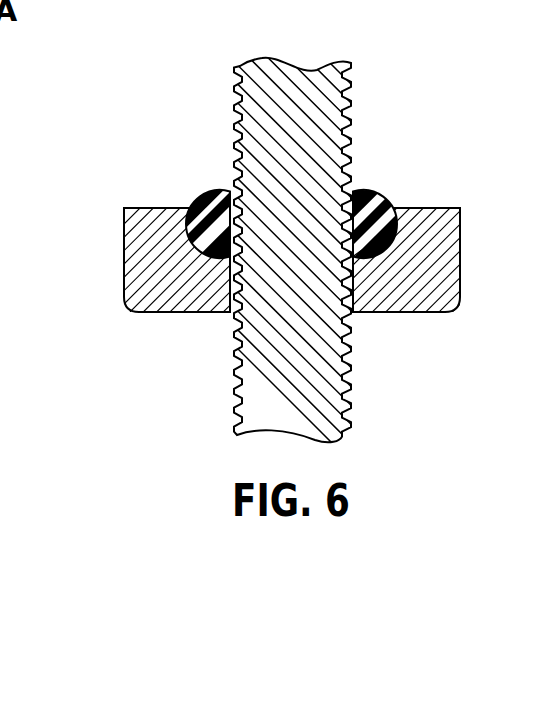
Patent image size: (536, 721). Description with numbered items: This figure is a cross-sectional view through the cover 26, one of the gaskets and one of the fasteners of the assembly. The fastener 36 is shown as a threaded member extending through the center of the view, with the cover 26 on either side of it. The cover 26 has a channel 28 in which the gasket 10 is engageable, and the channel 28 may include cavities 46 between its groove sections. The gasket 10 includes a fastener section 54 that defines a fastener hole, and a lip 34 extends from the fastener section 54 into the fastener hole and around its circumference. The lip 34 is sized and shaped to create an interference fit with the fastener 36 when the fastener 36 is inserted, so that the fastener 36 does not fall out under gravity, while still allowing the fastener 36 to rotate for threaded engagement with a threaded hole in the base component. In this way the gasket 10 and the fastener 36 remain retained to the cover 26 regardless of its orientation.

The fastener 36 is at (304, 93).
The cover 26 is at (437, 268).
The cavity 46 is at (188, 223).
The channel 28 is at (213, 182).
The gasket 10 is at (381, 191).
The fastener section 54 is at (212, 250).
The lip 34 is at (362, 250).